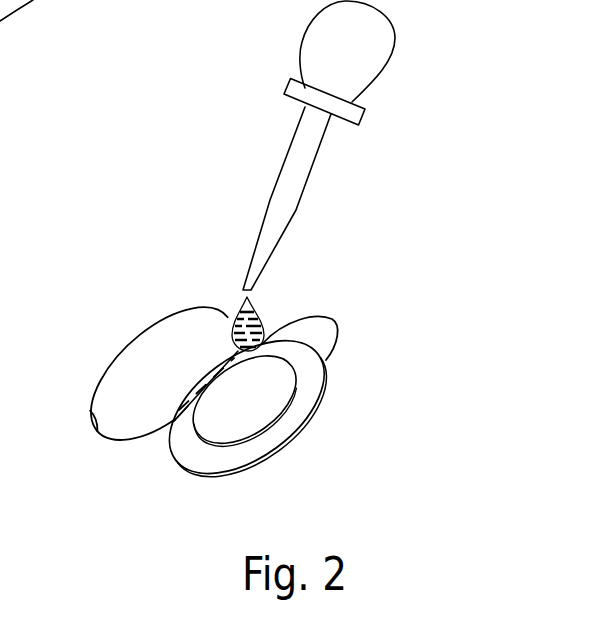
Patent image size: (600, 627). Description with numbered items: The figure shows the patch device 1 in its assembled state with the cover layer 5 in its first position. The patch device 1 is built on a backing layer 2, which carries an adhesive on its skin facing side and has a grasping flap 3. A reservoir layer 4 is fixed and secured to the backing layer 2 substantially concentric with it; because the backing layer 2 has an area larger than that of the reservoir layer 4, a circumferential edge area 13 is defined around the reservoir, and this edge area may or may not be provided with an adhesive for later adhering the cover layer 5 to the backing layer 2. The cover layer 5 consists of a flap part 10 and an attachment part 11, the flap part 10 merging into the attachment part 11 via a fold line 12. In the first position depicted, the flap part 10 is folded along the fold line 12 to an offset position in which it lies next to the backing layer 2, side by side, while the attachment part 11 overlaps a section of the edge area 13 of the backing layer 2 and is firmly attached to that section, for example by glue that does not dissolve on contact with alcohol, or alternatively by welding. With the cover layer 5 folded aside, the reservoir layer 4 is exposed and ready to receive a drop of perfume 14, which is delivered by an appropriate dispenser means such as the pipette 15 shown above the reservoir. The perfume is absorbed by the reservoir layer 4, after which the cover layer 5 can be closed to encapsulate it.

The patch device 1 is at (140, 303).
The backing layer 2 is at (248, 452).
The grasping flap 3 is at (328, 333).
The reservoir layer 4 is at (262, 407).
The cover layer 5 is at (135, 348).
The flap part 10 is at (105, 395).
The attachment part 11 is at (182, 402).
The fold line 12 is at (193, 378).
The circumferential edge area 13 is at (187, 443).
The drop of perfume 14 is at (262, 313).
The pipette 15 is at (290, 177).